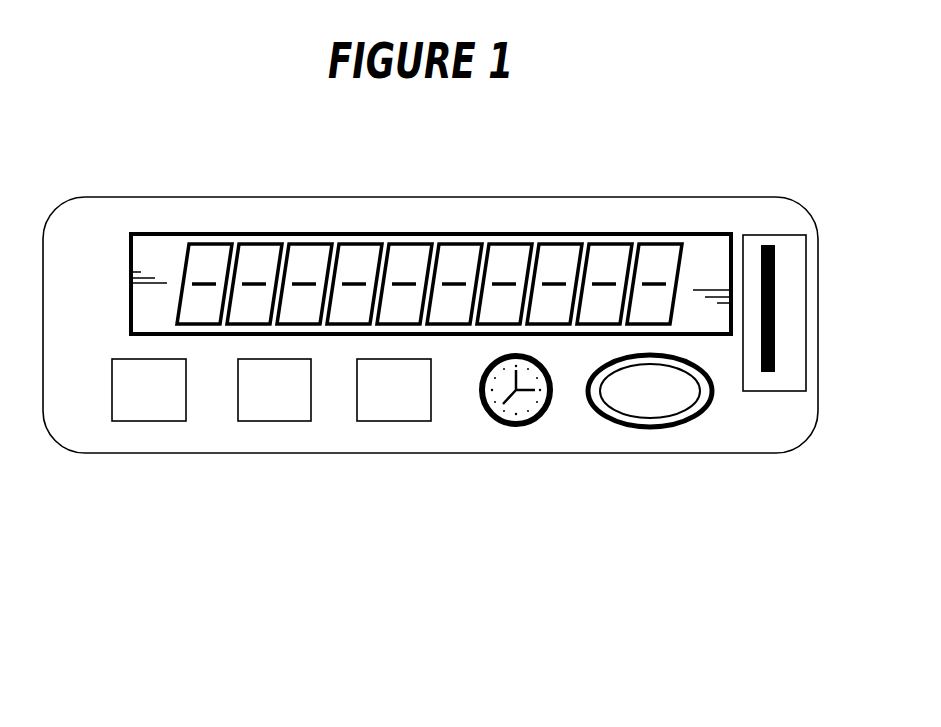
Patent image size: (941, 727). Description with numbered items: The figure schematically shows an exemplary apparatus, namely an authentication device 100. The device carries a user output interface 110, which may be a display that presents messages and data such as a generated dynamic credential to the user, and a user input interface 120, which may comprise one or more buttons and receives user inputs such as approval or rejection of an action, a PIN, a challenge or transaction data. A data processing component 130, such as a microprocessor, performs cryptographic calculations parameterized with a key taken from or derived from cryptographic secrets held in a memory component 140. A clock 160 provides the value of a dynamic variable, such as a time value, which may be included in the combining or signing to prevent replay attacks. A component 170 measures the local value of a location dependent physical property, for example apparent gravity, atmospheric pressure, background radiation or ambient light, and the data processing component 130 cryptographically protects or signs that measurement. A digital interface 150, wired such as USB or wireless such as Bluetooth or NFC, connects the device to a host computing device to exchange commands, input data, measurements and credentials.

The authentication device 100 is at (823, 383).
The user output interface 110 is at (568, 232).
The user input interface 120 is at (678, 434).
The data processing component 130 is at (149, 434).
The memory component 140 is at (274, 434).
The digital interface 150 is at (393, 434).
The clock 160 is at (528, 434).
The component for measuring the local value of a location dependent physical propert 170 is at (770, 237).